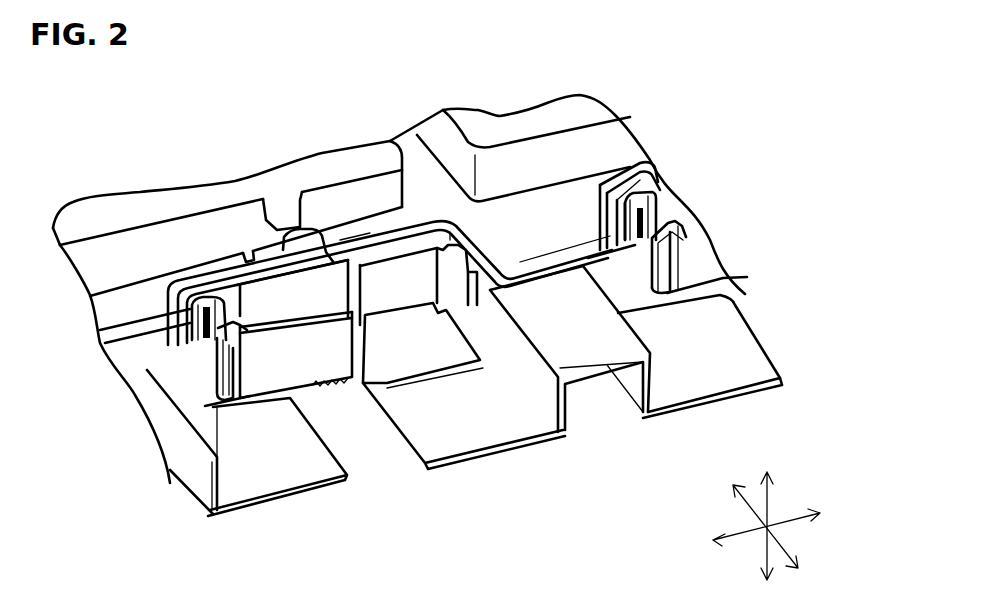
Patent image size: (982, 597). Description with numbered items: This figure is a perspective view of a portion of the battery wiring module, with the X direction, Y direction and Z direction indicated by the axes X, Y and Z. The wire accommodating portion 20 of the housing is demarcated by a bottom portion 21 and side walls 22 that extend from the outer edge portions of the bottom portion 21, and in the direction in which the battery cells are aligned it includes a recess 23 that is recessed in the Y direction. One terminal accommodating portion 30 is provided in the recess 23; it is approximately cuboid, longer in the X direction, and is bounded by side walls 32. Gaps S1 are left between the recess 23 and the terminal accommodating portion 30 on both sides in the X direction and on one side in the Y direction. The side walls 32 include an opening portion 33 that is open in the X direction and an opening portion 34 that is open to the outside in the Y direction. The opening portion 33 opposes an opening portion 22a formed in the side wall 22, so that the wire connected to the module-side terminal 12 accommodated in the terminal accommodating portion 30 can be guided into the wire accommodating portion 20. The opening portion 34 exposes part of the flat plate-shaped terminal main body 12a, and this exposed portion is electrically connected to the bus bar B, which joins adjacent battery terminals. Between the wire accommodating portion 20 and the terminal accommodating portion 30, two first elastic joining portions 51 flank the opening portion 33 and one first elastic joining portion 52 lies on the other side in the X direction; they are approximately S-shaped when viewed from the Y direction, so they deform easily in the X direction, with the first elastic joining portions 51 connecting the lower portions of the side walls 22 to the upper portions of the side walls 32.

The module-side terminal 12 is at (464, 441).
The terminal main body 12a is at (428, 368).
The wire accommodating portion 20 is at (485, 210).
The bottom portion 21 is at (533, 205).
The side wall 22 is at (585, 240).
The opening portion 22a is at (193, 338).
The recess 23 is at (368, 238).
The terminal accommodating portion 30 is at (242, 293).
The side wall 32 is at (287, 187).
The opening portion 33 is at (230, 300).
The opening portion 34 is at (447, 312).
The first elastic joining portion 51 is at (193, 322).
The first elastic joining portion 52 is at (490, 300).
The bus bar B is at (256, 493).
The gap S1 is at (419, 241).
The X direction X is at (742, 538).
The Y direction Y is at (787, 547).
The Z direction Z is at (767, 505).